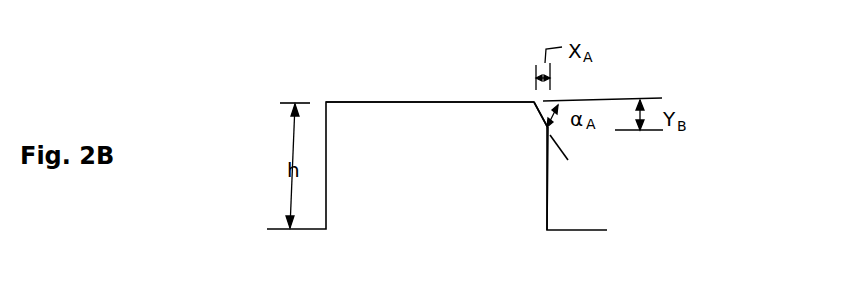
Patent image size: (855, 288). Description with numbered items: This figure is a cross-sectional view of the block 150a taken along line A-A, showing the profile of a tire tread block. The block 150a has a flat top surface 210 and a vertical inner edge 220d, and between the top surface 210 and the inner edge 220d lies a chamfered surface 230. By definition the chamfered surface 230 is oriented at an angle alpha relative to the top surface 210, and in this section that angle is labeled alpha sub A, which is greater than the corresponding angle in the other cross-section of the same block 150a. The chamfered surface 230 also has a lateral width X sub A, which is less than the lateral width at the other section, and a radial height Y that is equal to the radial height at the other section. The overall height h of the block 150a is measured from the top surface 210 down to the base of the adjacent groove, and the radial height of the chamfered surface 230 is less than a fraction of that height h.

The block 150a is at (427, 180).
The top surface 210 is at (433, 102).
The chamfered surface 230 is at (540, 116).
The inner edge 220d is at (550, 193).